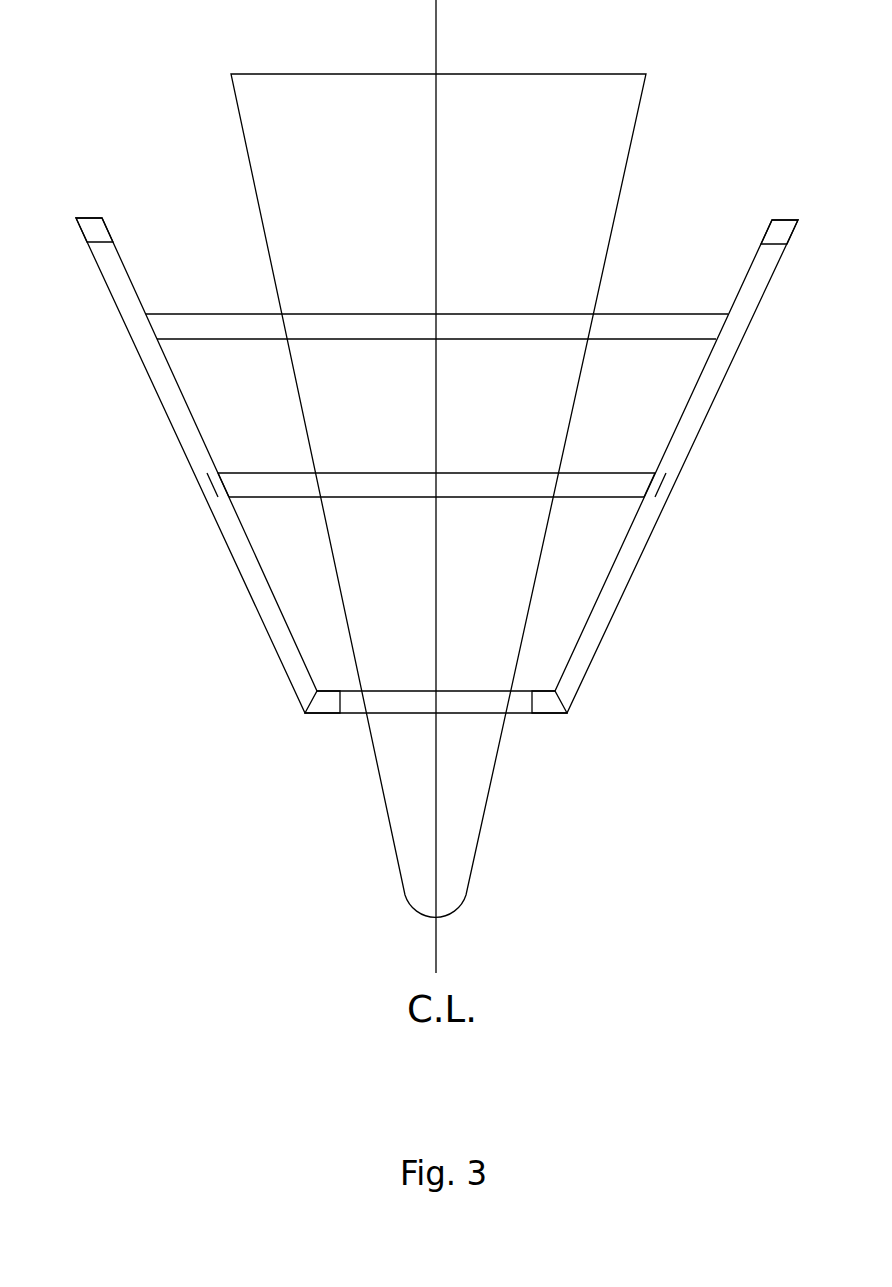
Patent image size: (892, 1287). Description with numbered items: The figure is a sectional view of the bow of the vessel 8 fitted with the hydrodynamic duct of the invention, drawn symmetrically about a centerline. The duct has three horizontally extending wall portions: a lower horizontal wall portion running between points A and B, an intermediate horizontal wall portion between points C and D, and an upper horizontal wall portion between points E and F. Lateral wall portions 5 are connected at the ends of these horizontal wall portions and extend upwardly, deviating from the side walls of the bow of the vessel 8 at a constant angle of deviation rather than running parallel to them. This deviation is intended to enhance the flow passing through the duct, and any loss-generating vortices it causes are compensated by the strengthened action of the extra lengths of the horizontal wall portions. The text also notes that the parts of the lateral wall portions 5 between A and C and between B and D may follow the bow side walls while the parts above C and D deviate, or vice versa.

The lateral wall portions 5 is at (262, 622).
The bow of the vessel 8 is at (475, 855).
The end point of lower horizontal wall portion A is at (285, 705).
The end point of lower horizontal wall portion B is at (588, 705).
The end point of intermediate horizontal wall portion C is at (190, 494).
The end point of intermediate horizontal wall portion D is at (692, 494).
The end point of upper horizontal wall portion E is at (86, 284).
The end point of upper horizontal wall portion F is at (789, 285).